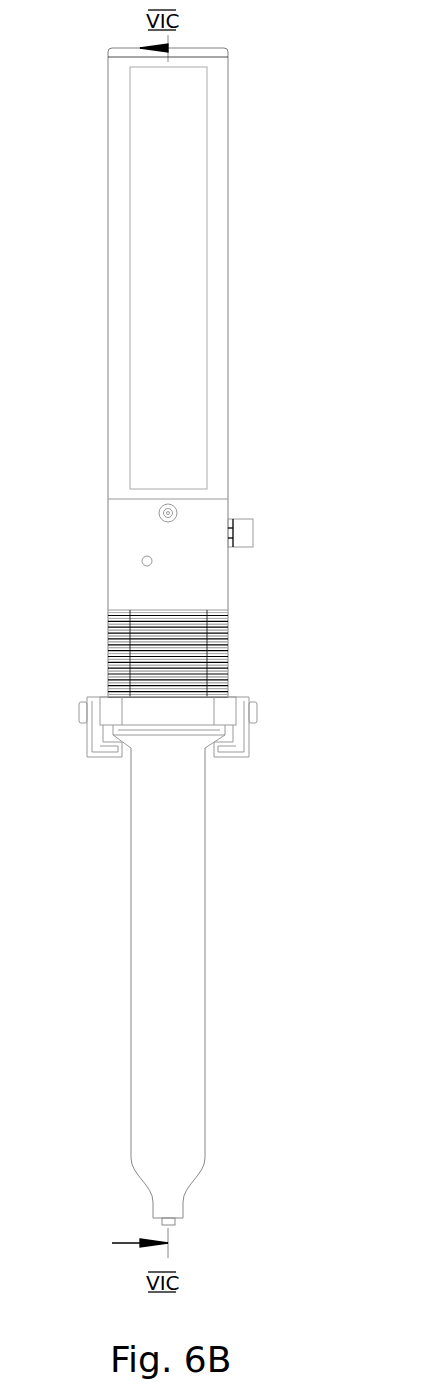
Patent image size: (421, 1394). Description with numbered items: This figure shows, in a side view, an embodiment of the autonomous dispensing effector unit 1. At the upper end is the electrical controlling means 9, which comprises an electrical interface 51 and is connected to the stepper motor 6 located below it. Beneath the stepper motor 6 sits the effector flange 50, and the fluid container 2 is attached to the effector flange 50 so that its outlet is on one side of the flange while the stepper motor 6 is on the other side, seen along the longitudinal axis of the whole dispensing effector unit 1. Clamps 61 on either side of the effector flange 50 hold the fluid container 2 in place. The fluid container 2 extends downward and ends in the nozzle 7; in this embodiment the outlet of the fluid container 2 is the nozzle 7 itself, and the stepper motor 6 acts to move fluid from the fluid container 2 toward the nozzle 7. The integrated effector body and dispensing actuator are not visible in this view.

The autonomous dispensing effector unit 1 is at (284, 168).
The fluid container 2 is at (178, 923).
The stepper motor 6 is at (120, 655).
The nozzle 7 is at (168, 1210).
The electrical controlling means 9 is at (142, 545).
The effector flange 50 is at (170, 720).
The electrical interface 51 is at (242, 532).
The clamps 61 is at (97, 737).